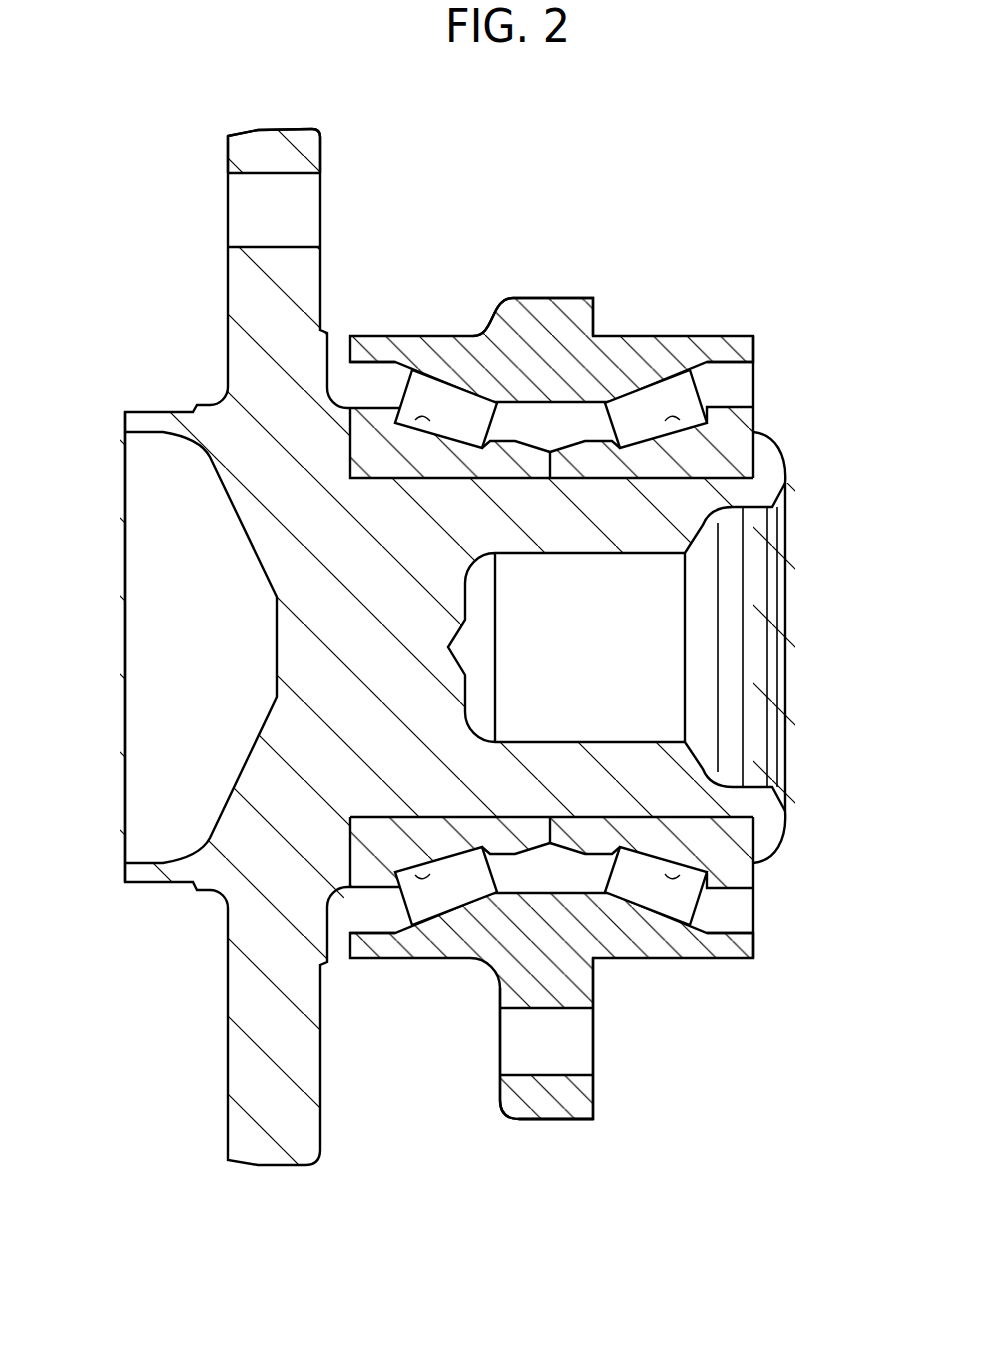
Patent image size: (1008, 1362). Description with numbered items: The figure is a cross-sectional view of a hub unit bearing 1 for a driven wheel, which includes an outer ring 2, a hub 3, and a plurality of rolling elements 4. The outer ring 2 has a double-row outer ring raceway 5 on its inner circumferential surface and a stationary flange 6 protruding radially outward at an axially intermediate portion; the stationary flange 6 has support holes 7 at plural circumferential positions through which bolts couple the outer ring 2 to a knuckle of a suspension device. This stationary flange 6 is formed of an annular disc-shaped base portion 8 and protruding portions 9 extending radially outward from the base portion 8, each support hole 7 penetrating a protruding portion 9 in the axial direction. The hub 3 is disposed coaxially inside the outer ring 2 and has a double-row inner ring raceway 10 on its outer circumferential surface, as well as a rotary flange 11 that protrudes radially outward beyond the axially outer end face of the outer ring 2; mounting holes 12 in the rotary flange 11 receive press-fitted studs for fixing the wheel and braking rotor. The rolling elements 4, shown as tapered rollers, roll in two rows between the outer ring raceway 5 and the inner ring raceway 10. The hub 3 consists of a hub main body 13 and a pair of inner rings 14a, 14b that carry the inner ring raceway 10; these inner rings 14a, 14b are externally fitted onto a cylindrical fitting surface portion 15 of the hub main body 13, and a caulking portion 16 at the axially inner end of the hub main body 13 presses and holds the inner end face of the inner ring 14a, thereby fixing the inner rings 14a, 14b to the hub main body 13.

The hub unit bearing 1 is at (678, 249).
The outer ring 2 is at (540, 328).
The hub 3 is at (103, 606).
The rolling elements 4 is at (430, 397).
The outer ring raceway 5 is at (455, 395).
The stationary flange 6 is at (550, 1107).
The support holes 7 is at (572, 1075).
The base portion 8 is at (570, 318).
The protruding portion 9 is at (580, 1105).
The inner ring raceway 10 is at (385, 418).
The rotary flange 11 is at (273, 143).
The mounting holes 12 is at (260, 177).
The hub main body 13 is at (262, 828).
The inner ring 14a is at (700, 835).
The inner ring 14b is at (355, 842).
The fitting surface portion 15 is at (487, 478).
The caulking portion 16 is at (775, 465).